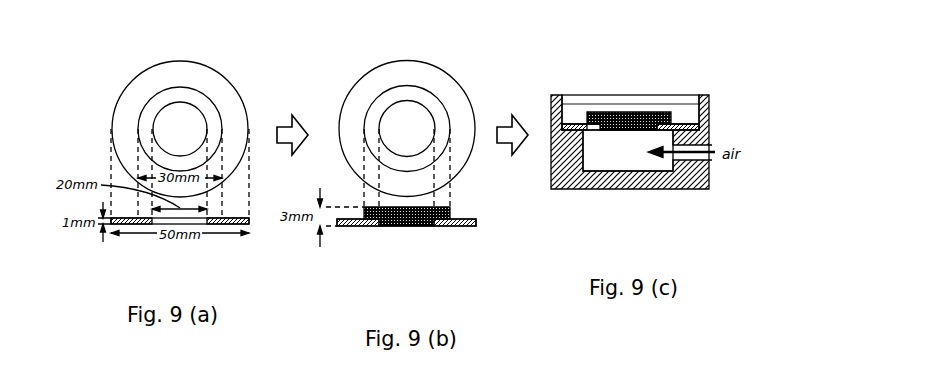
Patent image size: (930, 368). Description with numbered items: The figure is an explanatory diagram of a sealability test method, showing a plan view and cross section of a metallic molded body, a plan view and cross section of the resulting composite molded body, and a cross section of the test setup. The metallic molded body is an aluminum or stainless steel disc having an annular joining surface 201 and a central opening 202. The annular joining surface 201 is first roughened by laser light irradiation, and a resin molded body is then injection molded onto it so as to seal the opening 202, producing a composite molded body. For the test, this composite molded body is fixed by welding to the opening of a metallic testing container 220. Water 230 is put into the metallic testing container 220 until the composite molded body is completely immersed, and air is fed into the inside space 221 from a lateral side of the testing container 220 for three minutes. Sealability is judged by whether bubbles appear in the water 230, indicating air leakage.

The annular joining surface 201 is at (189, 100).
The opening 202 is at (168, 126).
The metallic testing container 220 is at (716, 123).
The inside space 221 is at (620, 166).
The water 230 is at (682, 112).